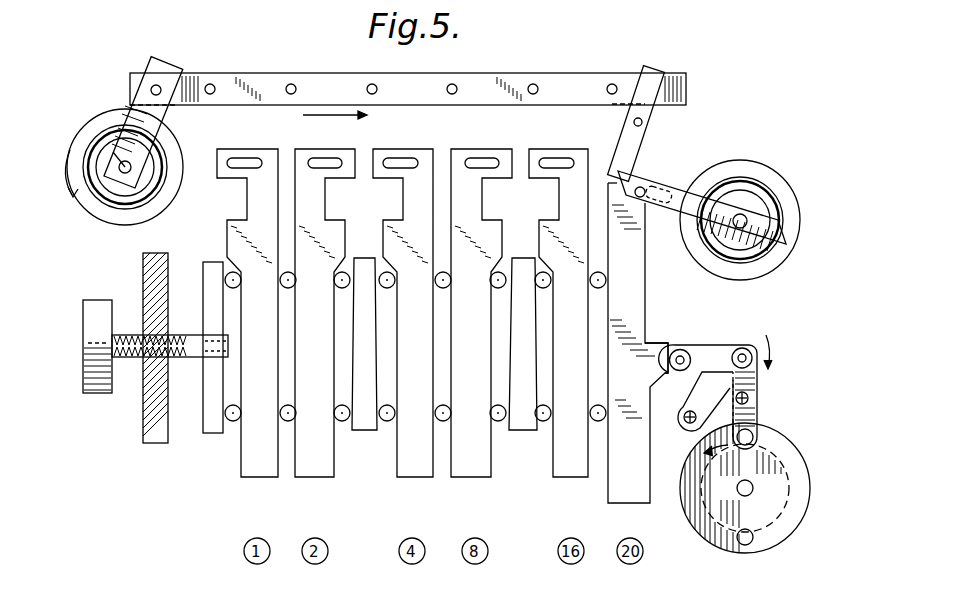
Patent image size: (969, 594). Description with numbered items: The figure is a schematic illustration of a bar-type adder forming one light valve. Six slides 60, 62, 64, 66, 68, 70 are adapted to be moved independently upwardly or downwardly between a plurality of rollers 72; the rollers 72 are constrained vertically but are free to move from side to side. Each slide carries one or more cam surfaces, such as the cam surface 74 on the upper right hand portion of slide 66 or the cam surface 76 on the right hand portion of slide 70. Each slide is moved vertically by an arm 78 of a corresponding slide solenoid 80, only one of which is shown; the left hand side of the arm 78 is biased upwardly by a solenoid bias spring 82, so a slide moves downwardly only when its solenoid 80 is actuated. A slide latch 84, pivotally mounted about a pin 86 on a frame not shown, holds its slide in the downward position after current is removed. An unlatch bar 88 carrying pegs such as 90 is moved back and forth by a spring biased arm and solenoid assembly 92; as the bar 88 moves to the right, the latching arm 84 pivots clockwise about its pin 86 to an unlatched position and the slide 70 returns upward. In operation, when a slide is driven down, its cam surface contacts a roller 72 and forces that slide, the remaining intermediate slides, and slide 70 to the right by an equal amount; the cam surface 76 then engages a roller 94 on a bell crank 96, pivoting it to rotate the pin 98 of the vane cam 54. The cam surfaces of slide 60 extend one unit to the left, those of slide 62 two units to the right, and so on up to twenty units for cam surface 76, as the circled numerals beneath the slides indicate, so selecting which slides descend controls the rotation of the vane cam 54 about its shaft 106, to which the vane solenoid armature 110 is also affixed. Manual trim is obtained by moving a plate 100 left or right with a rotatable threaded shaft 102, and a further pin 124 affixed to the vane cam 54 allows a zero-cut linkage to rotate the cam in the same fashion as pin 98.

The vane cam 54 is at (696, 528).
The slide 60 is at (262, 480).
The slide 62 is at (316, 480).
The slide 64 is at (416, 480).
The slide 66 is at (486, 480).
The slide 68 is at (560, 478).
The slide 70 is at (622, 505).
The rollers 72 is at (229, 273).
The cam surface 74 is at (493, 228).
The cam surface 76 is at (655, 342).
The arm 78 is at (646, 172).
The slide solenoid 80 is at (740, 160).
The solenoid bias spring 82 is at (752, 210).
The slide latch 84 is at (638, 150).
The pin 86 is at (643, 123).
The unlatch bar 88 is at (487, 80).
The pegs 90 is at (215, 86).
The spring biased arm and solenoid assembly 92 is at (156, 202).
The roller 94 is at (686, 350).
The bell crank 96 is at (727, 345).
The pin 98 is at (752, 437).
The plate 100 is at (213, 430).
The rotatable threaded shaft 102 is at (130, 365).
The shaft 106 is at (750, 484).
The armature 110 is at (788, 488).
The pin 124 is at (750, 542).